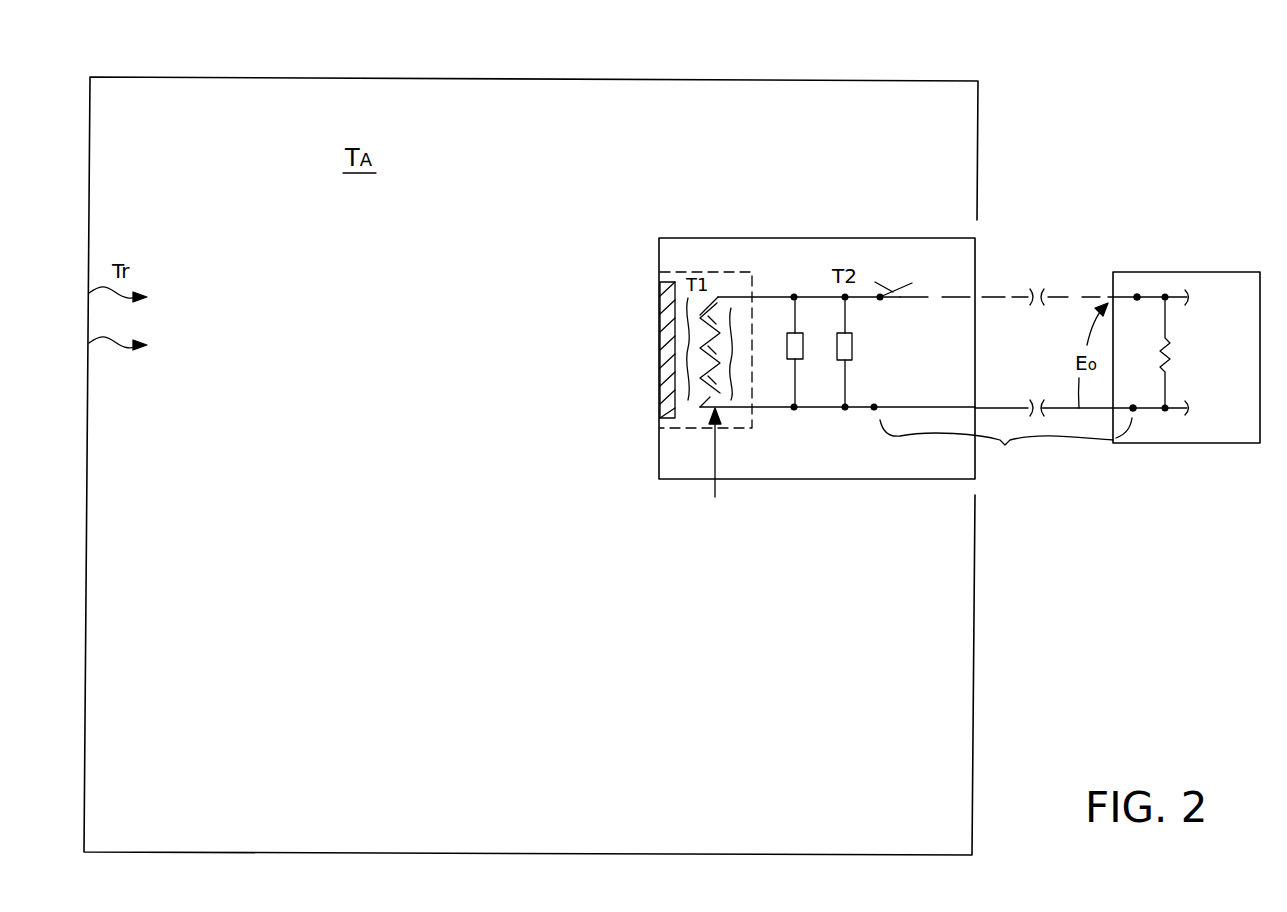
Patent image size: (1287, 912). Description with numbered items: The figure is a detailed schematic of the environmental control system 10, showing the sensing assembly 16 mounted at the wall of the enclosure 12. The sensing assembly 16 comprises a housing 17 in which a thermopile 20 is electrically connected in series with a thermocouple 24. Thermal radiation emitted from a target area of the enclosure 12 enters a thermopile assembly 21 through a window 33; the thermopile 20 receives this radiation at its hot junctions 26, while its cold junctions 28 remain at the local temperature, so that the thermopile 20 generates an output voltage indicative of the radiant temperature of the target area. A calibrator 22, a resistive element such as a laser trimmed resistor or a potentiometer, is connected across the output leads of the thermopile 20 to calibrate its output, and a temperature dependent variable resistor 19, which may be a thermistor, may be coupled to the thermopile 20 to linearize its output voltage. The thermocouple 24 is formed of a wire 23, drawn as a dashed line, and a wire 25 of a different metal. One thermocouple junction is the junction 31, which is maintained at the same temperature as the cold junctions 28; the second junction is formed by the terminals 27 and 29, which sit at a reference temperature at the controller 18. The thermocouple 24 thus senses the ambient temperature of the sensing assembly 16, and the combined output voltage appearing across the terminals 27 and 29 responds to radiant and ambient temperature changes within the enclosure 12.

The radiation detector system 10 is at (1087, 135).
The enclosure 12 is at (808, 81).
The sensing assembly 16 is at (935, 482).
The housing 17 is at (815, 238).
The controller 18 is at (1237, 272).
The temperature dependent variable resistor 19 is at (853, 347).
The thermopile 20 is at (714, 490).
The thermopile assembly 21 is at (702, 272).
The calibrator 22 is at (788, 332).
The wire 23 is at (997, 297).
The thermocouple 24 is at (996, 445).
The wire 25 is at (993, 407).
The hot junctions 26 is at (682, 338).
The terminal 27 is at (1137, 297).
The cold junctions 28 is at (738, 358).
The terminal 29 is at (1135, 412).
The junction 31 is at (901, 275).
The window 33 is at (665, 408).